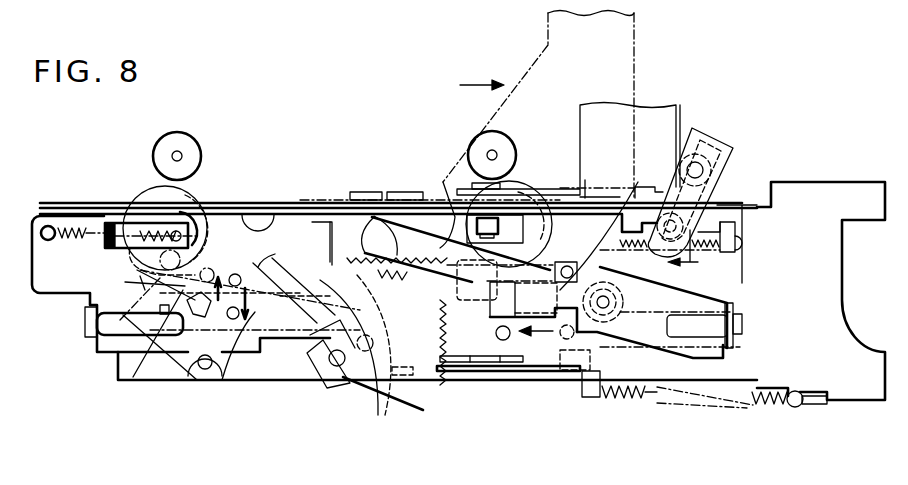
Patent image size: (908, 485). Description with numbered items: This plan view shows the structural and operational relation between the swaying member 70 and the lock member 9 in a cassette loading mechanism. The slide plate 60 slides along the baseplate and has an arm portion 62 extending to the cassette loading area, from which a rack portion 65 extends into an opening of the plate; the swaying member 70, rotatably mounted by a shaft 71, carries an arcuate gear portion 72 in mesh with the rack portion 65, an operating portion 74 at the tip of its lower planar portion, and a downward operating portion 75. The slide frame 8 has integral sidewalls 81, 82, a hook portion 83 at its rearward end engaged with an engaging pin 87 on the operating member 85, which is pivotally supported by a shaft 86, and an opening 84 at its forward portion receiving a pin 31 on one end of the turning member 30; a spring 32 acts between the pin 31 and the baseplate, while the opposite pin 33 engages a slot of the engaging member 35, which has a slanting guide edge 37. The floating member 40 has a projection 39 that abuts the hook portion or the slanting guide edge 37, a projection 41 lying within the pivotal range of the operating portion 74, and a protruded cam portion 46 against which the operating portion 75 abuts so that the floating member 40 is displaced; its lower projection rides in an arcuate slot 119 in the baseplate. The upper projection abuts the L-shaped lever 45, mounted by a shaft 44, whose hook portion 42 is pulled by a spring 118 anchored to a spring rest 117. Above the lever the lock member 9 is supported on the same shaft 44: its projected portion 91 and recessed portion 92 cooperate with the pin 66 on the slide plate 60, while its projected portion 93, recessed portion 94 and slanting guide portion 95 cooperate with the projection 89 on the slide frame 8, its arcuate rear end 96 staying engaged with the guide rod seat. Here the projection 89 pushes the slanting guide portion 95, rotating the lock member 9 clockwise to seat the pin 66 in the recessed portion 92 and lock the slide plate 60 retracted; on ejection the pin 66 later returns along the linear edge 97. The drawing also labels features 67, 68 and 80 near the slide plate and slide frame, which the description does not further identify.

The slide frame 8 is at (277, 347).
The lock member 9 is at (422, 250).
The turning member 30 is at (150, 262).
The pin 31 is at (186, 204).
The spring 32 is at (76, 226).
The pin 33 is at (147, 353).
The engaging member 35 is at (180, 362).
The slanting guide edge 37 is at (142, 282).
The projection 39 is at (209, 268).
The floating member 40 is at (253, 348).
The projection 41 is at (237, 274).
The hook portion 42 is at (592, 397).
The shaft 44 is at (605, 310).
The L-shaped lever 45 is at (640, 345).
The cam portion 46 is at (418, 397).
The slide plate 60 is at (392, 215).
The arm portion 62 is at (634, 47).
The rack portion 65 is at (368, 260).
The pin 66 is at (570, 265).
The housing 67 is at (564, 196).
The bracket 68 is at (496, 207).
The swaying member 70 is at (390, 393).
The shaft 71 is at (343, 375).
The arcuate gear portion 72 is at (433, 388).
The operating portion 74 is at (473, 382).
The operating portion 75 is at (370, 372).
The guide post 80 is at (312, 272).
The sidewall 81 is at (427, 213).
The sidewall 82 is at (443, 371).
The hook portion 83 is at (708, 204).
The opening 84 is at (113, 223).
The operating member 85 is at (705, 134).
The shaft 86 is at (703, 171).
The engaging pin 87 is at (728, 229).
The projection 89 is at (503, 341).
The projected portion 91 is at (611, 227).
The recessed portion 92 is at (562, 284).
The projected portion 93 is at (598, 350).
The recessed portion 94 is at (535, 330).
The slanting guide portion 95 is at (530, 372).
The arcuate rear end 96 is at (728, 346).
The linear edge 97 is at (515, 232).
The spring rest 117 is at (812, 405).
The spring 118 is at (768, 406).
The arcuate slot 119 is at (443, 182).